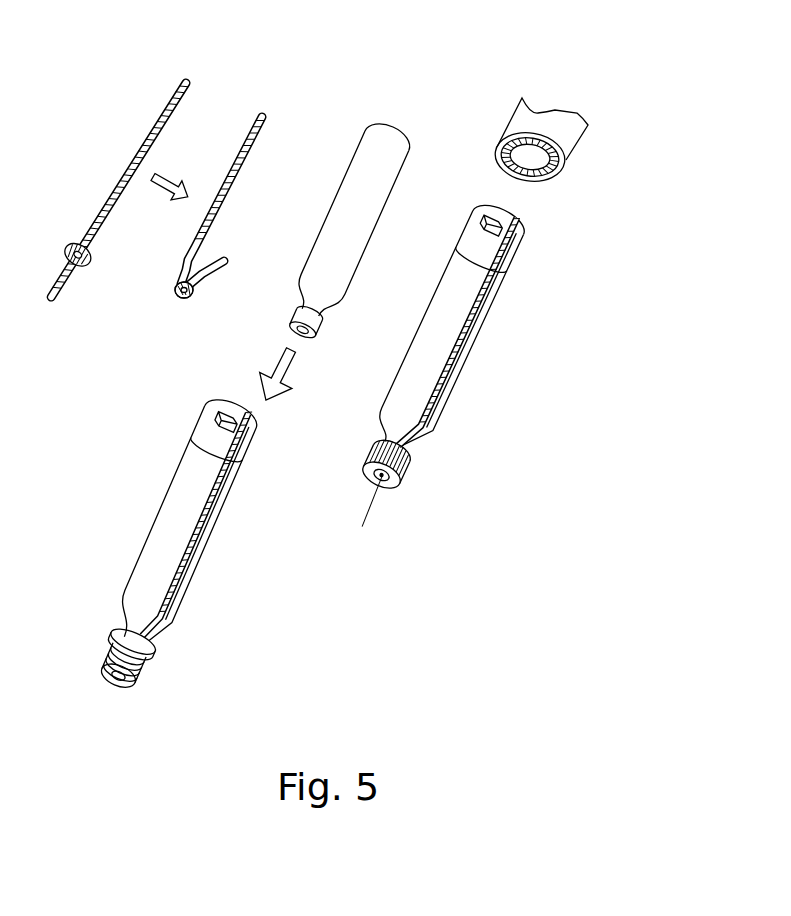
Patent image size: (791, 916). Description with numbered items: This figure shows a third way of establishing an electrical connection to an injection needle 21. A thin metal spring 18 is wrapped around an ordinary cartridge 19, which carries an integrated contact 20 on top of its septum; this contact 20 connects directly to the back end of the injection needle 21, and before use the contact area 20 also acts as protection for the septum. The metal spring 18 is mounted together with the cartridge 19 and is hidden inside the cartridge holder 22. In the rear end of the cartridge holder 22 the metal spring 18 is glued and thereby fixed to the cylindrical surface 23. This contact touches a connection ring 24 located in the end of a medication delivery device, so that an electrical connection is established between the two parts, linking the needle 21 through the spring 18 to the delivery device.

The thin metal spring 18 is at (168, 100).
The cartridge 19 is at (392, 138).
The integrated contact 20 is at (178, 288).
The injection needle 21 is at (395, 485).
The cartridge holder 22 is at (180, 518).
The cylindrical surface 23 is at (519, 265).
The connection ring 24 is at (553, 168).